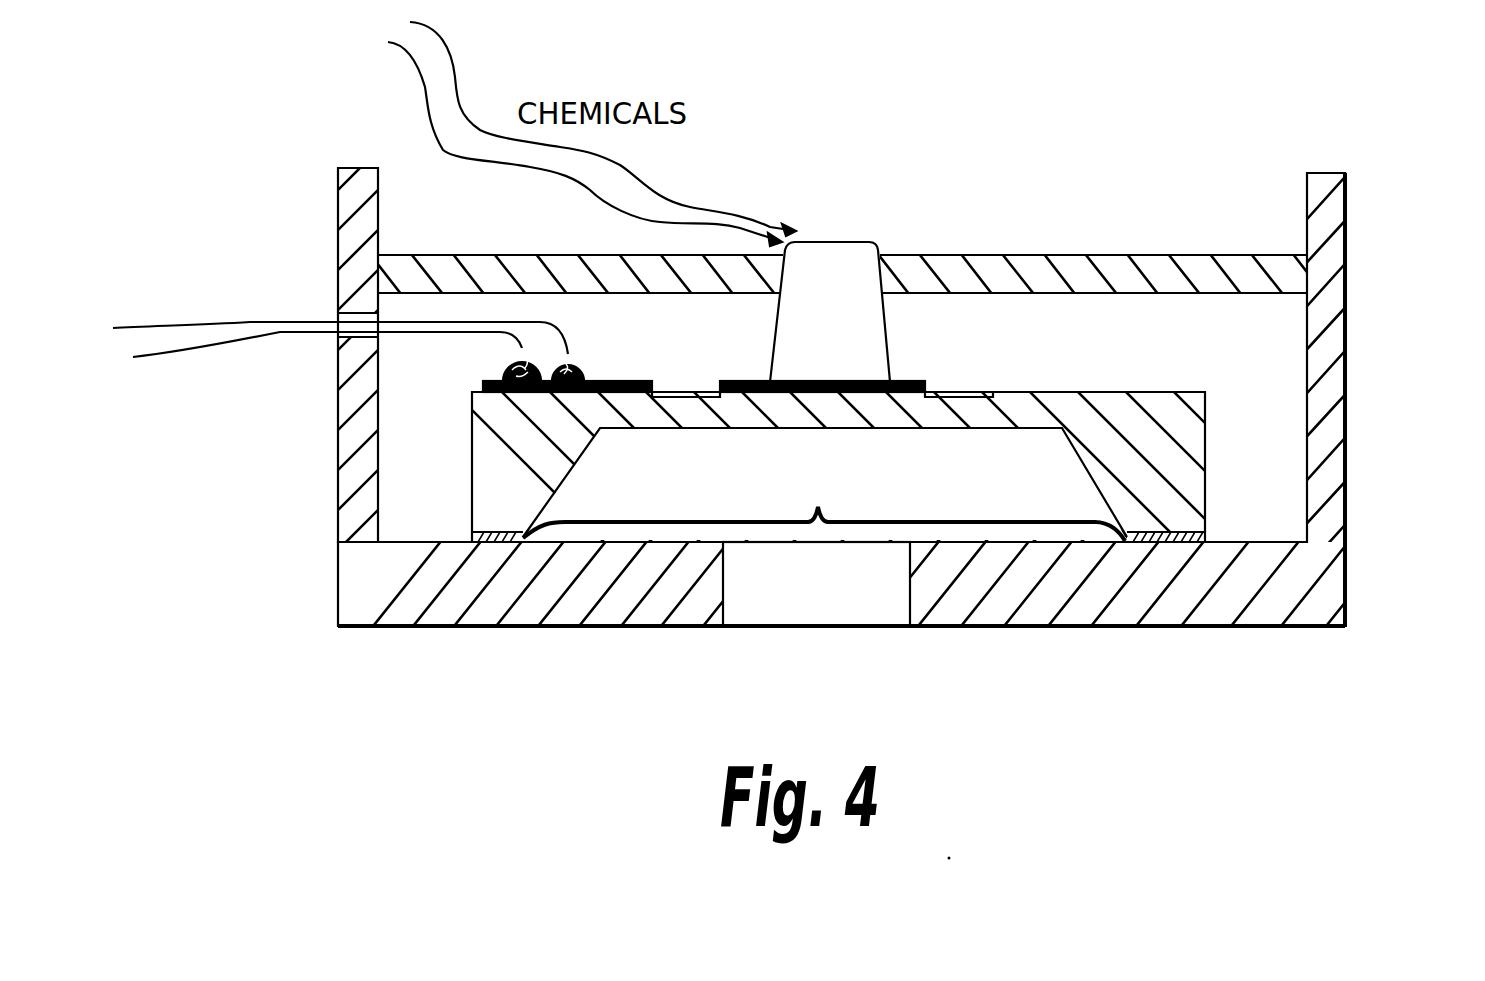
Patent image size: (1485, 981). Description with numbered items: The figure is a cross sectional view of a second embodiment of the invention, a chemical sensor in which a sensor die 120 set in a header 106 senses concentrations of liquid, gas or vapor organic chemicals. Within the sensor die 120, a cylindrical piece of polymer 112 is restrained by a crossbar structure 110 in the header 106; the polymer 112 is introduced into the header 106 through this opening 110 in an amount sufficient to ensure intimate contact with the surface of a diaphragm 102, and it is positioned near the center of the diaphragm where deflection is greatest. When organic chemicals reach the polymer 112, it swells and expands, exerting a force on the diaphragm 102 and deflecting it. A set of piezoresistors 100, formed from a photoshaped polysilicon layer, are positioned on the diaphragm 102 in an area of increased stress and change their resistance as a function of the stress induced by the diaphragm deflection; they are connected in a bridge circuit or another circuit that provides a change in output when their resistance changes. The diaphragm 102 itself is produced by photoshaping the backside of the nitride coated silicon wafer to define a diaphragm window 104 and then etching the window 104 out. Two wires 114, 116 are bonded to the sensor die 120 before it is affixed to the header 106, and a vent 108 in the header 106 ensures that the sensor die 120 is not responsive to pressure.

The piezoresistors 100 is at (710, 396).
The diaphragm 102 is at (1030, 405).
The diaphragm window 104 is at (824, 506).
The header 106 is at (1347, 548).
The vent 108 is at (725, 635).
The crossbar structure 110 is at (915, 246).
The polymer 112 is at (847, 346).
The wire 114 is at (222, 348).
The wire 116 is at (247, 322).
The sensor die 120 is at (478, 470).